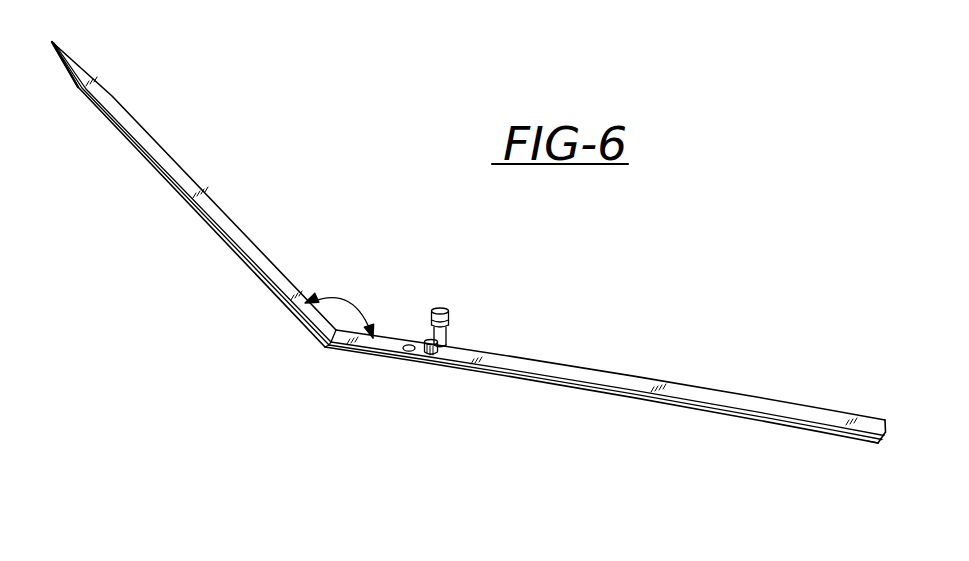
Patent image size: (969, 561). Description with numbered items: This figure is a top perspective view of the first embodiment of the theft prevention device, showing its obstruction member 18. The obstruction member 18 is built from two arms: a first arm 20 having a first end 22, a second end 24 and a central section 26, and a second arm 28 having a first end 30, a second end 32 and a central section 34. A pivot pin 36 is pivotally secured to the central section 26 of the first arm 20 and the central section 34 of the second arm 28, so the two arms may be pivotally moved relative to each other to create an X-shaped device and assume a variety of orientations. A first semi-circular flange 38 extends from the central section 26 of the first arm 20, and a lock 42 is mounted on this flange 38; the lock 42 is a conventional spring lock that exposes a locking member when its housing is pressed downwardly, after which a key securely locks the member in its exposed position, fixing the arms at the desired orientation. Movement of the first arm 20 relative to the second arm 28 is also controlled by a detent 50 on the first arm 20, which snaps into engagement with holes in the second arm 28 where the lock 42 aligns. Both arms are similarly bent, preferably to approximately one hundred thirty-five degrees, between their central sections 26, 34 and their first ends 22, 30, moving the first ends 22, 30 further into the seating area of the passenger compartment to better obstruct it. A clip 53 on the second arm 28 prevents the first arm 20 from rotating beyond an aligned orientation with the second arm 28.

The obstruction member 18 is at (284, 206).
The first arm 20 is at (182, 170).
The first end of the first arm 22 is at (56, 40).
The second end of the first arm 24 is at (862, 425).
The central section of the first arm 26 is at (520, 355).
The second arm 28 is at (215, 240).
The first end of the second arm 30 is at (55, 45).
The second end of the second arm 32 is at (877, 442).
The central section of the second arm 34 is at (478, 378).
The pivot pin 36 is at (400, 352).
The first semi-circular flange 38 is at (403, 327).
The lock 42 is at (448, 309).
The detent 50 is at (432, 362).
The clip 53 is at (597, 372).